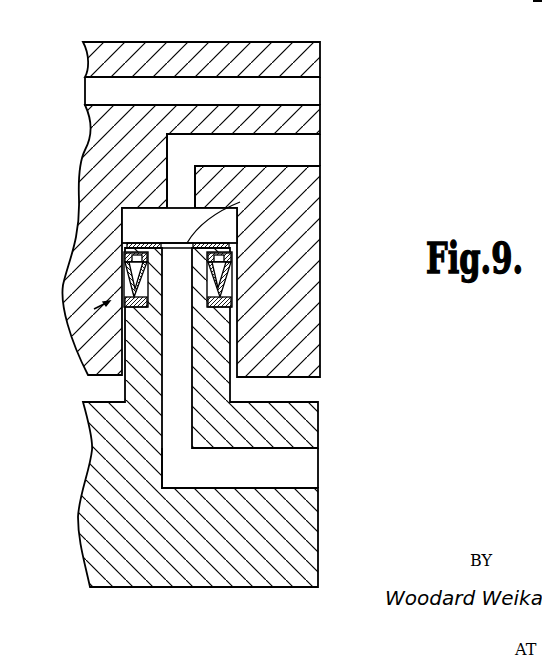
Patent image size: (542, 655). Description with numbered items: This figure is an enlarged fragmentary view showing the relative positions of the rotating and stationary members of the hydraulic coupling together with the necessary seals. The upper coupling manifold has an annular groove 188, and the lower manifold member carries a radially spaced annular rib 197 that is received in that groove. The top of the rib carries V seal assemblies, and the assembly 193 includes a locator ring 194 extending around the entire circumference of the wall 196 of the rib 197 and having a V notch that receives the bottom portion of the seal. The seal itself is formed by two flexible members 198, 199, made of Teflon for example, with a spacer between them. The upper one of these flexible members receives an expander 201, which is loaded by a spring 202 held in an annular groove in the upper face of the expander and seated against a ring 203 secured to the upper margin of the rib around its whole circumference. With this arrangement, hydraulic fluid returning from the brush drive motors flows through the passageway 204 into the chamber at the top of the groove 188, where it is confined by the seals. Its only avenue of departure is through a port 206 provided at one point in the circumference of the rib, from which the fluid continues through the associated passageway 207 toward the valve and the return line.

The annular groove 188 is at (137, 223).
The V seal assembly 193 is at (88, 300).
The locator ring 194 is at (232, 300).
The wall 196 is at (237, 312).
The rib 197 is at (232, 350).
The flexible member 198 is at (236, 274).
The flexible member 199 is at (236, 288).
The expander 201 is at (237, 258).
The spring 202 is at (123, 257).
The ring 203 is at (131, 243).
The passageway 204 is at (303, 152).
The port 206 is at (240, 202).
The passageway 207 is at (307, 469).